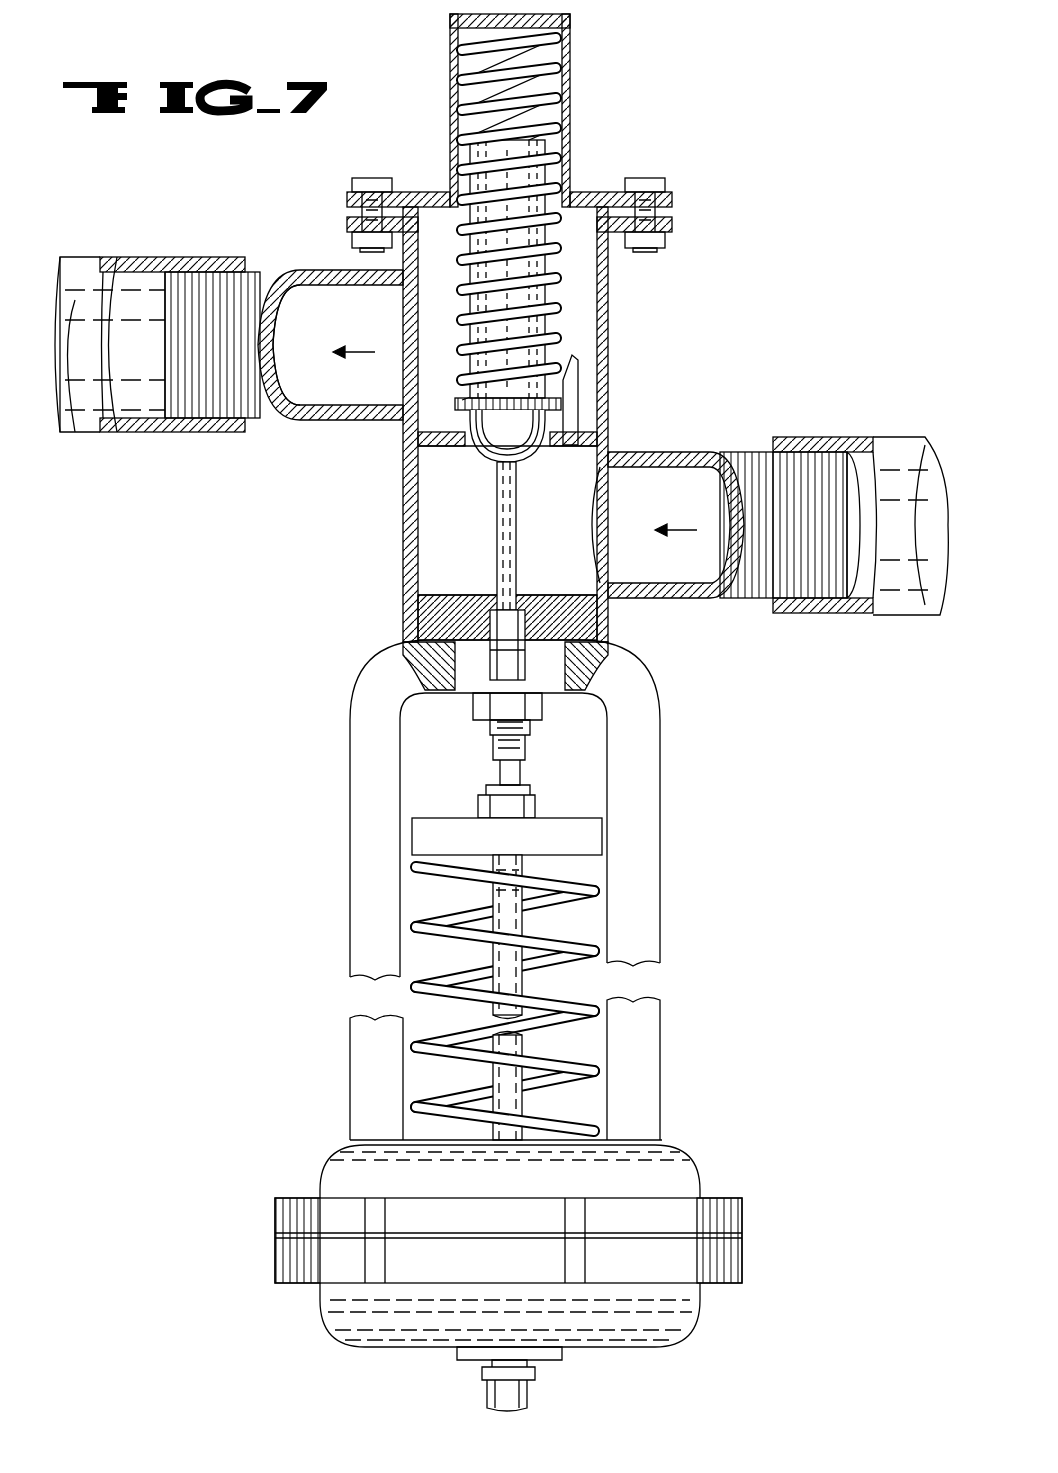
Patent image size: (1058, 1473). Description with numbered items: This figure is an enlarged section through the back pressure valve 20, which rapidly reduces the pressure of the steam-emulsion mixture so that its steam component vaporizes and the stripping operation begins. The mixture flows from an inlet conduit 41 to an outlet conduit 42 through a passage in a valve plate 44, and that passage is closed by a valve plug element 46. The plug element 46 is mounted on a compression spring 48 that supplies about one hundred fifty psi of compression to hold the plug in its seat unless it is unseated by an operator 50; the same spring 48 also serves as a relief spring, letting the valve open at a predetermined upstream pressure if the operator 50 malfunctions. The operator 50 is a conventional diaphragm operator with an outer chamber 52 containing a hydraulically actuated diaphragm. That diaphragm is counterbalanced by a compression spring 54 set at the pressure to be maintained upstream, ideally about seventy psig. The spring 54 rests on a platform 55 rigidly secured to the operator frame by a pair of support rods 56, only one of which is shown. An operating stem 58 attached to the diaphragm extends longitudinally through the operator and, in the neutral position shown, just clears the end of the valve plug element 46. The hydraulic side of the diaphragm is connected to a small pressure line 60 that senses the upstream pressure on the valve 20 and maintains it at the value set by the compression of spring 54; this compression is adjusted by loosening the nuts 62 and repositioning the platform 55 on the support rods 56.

The back pressure valve 20 is at (760, 297).
The inlet conduit 41 is at (823, 440).
The outlet conduit 42 is at (128, 268).
The valve plate 44 is at (438, 440).
The valve plug element 46 is at (524, 448).
The compression spring 48 is at (520, 265).
The operator 50 is at (686, 835).
The outer chamber 52 is at (695, 1308).
The compression spring 54 is at (592, 1015).
The platform 55 is at (449, 828).
The support rods 56 is at (529, 997).
The operating stem 58 is at (517, 557).
The pressure line 60 is at (527, 1392).
The nuts 62 is at (530, 806).